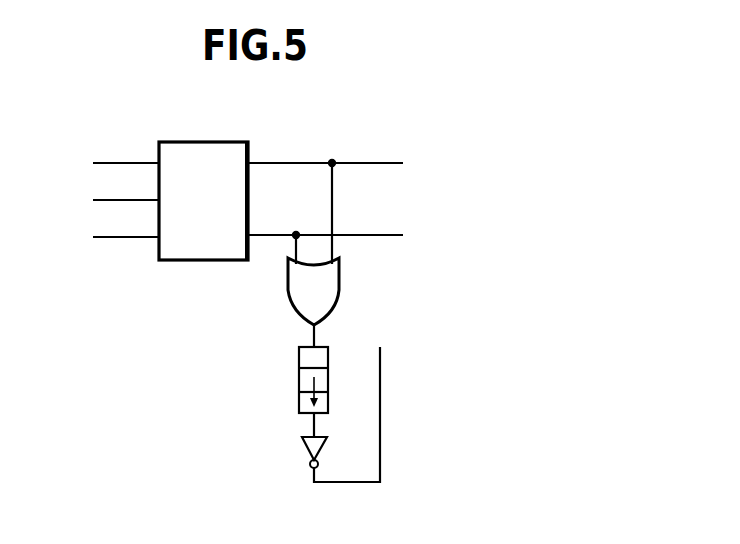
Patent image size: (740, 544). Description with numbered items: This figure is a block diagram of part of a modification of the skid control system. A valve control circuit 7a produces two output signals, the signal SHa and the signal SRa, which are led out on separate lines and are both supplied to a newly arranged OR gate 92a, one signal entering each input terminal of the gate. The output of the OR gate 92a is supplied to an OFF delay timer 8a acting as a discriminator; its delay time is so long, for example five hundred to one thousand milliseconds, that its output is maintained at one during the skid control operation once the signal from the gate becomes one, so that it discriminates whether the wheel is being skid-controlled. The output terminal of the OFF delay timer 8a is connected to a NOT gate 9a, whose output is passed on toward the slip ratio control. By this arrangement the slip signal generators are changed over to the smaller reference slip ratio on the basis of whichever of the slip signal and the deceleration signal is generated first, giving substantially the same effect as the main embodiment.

The valve control circuit 7a is at (198, 148).
The output signal SHa is at (401, 207).
The output signal SRa is at (401, 243).
The OR gate 92a is at (328, 290).
The OFF delay timer 8a is at (299, 377).
The NOT gate 9a is at (303, 442).